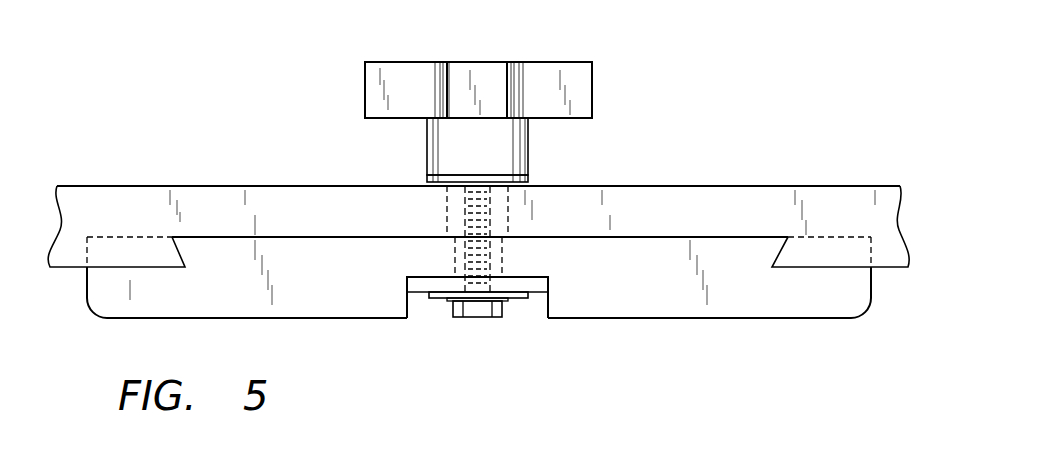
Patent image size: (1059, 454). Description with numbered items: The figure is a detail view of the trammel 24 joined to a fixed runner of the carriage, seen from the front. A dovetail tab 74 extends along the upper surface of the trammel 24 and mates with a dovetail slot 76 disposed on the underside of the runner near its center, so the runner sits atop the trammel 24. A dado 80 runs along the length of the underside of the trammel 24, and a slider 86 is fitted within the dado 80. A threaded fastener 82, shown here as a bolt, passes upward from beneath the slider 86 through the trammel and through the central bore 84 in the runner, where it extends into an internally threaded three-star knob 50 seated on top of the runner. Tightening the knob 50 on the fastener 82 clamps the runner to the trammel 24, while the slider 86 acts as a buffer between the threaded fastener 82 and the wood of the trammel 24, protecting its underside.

The 3-star knob 50 is at (551, 68).
The dovetail slot 76 is at (678, 235).
The trammel 24 is at (818, 303).
The dovetail tab 74 is at (707, 270).
The dado 80 is at (545, 305).
The slider 86 is at (418, 287).
The threaded fastener 82 is at (470, 308).
The central bore 84 is at (510, 215).